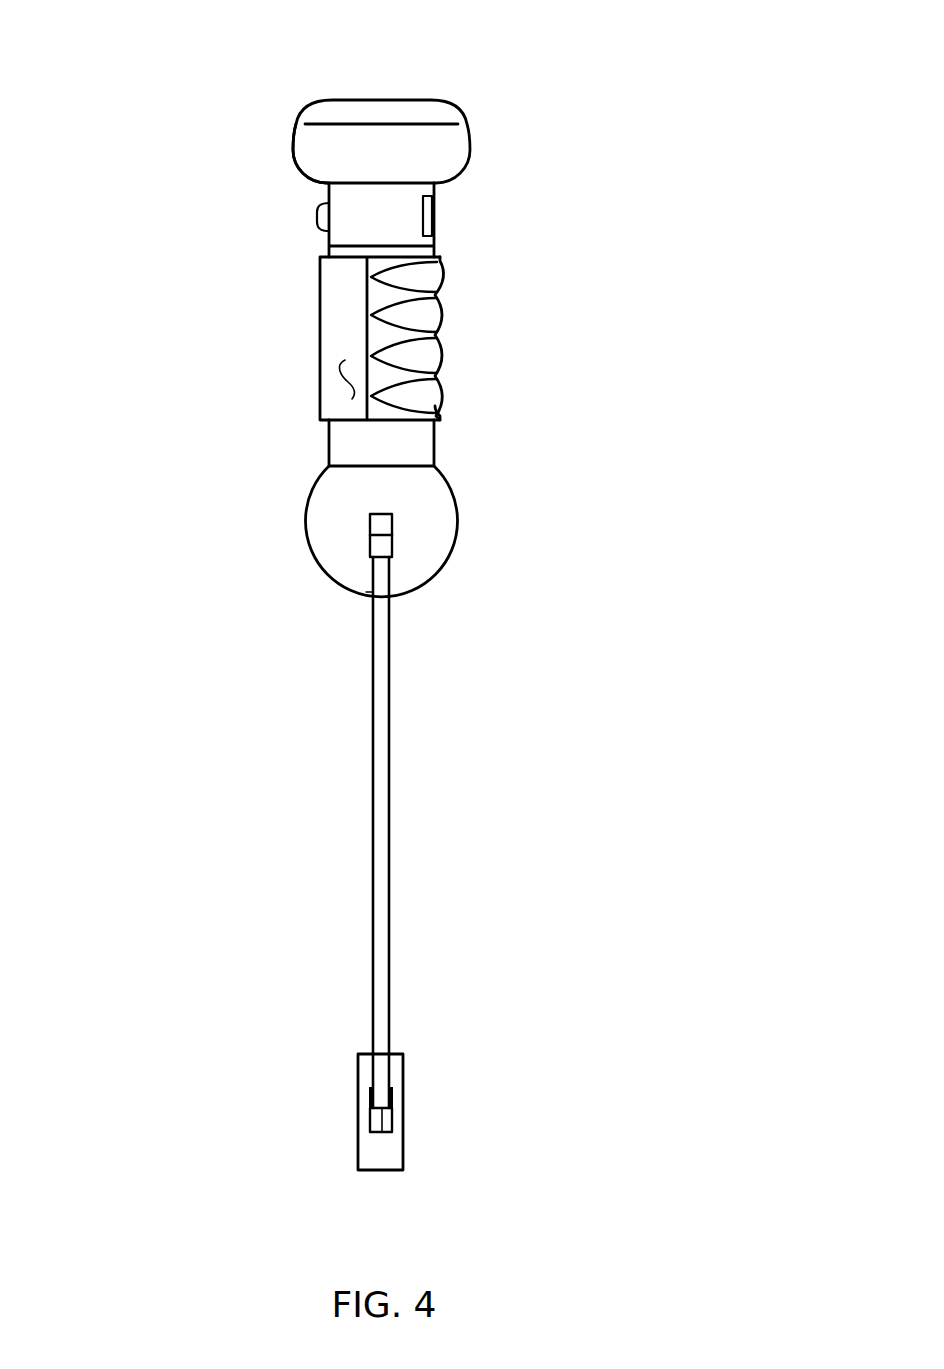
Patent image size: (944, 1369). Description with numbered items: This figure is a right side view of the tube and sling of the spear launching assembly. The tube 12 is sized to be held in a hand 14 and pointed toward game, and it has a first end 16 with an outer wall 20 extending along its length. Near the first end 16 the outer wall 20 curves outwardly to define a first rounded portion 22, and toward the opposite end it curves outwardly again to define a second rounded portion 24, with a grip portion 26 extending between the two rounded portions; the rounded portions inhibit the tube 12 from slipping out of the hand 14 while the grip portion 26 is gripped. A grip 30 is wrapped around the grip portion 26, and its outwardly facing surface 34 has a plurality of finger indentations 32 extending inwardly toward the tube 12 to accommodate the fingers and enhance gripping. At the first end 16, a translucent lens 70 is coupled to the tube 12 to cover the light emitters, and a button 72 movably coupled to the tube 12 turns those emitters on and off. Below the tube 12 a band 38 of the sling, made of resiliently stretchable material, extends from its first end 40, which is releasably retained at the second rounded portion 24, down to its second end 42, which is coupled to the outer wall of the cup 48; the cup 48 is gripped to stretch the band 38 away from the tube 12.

The tube 12 is at (470, 217).
The hand 14 is at (347, 123).
The first end 16 is at (367, 593).
The outer wall 20 is at (358, 443).
The first rounded portion 22 is at (295, 156).
The second rounded portion 24 is at (460, 517).
The grip portion 26 is at (333, 237).
The grip 30 is at (320, 300).
The finger indentations 32 is at (466, 277).
The outwardly facing surface 34 is at (348, 385).
The bands 38 is at (390, 938).
The first end 40 is at (380, 557).
The second end 42 is at (381, 1133).
The cup 48 is at (358, 1150).
The lens 70 is at (427, 100).
The button 72 is at (317, 226).